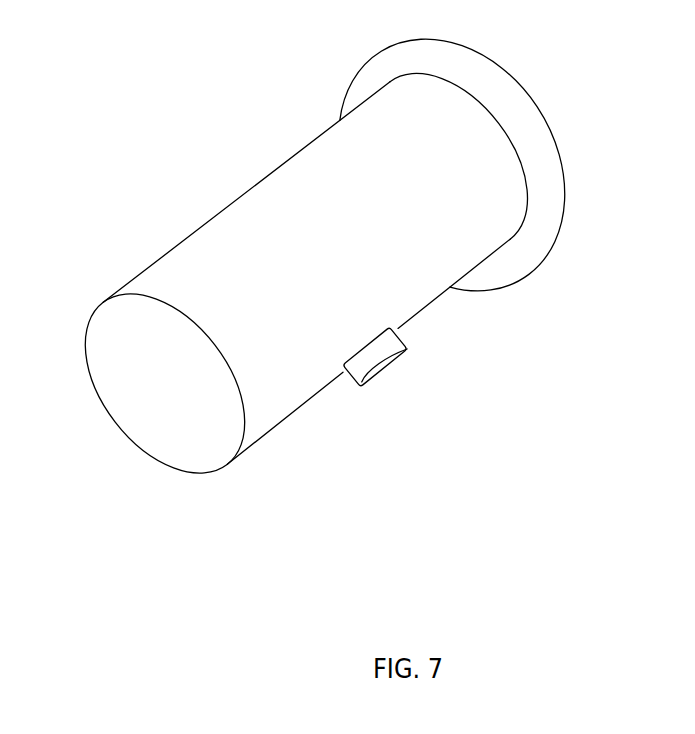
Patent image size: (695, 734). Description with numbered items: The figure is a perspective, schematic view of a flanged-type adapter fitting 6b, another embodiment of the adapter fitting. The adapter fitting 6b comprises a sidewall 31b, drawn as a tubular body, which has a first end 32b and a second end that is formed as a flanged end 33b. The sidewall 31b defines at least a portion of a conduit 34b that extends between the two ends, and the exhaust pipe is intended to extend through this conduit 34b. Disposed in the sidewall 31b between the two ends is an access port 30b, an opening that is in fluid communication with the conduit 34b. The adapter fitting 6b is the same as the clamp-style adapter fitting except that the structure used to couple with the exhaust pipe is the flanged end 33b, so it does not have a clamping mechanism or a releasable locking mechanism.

The adapter fitting 6b is at (135, 75).
The access port 30b is at (385, 380).
The sidewall 31b is at (93, 392).
The first end 32b is at (231, 470).
The flanged end 33b is at (557, 262).
The conduit 34b is at (185, 430).